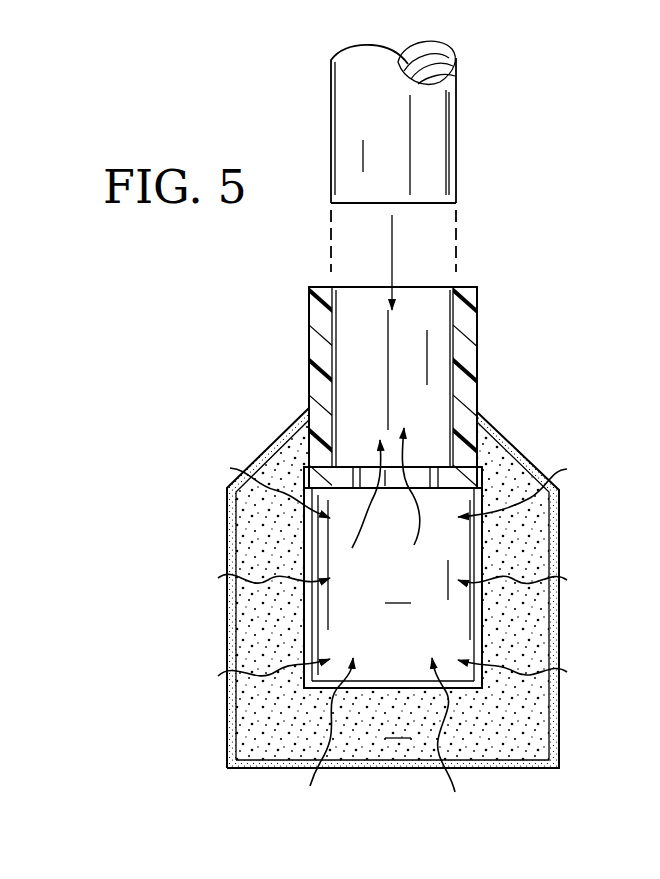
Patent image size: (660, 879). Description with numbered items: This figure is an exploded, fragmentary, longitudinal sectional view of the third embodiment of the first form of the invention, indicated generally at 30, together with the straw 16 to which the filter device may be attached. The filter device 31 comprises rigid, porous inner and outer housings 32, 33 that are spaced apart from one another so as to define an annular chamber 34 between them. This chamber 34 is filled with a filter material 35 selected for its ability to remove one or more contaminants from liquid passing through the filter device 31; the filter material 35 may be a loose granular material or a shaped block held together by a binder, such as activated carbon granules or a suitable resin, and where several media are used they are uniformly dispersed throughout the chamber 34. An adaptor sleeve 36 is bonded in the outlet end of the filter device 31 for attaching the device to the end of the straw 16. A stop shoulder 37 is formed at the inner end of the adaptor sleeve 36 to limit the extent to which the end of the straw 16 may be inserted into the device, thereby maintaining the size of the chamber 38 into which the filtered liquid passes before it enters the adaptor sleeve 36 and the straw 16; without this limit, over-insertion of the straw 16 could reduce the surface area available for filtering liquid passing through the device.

The straw 16 is at (456, 80).
The third embodiment of the first form of the invention 30 is at (430, 539).
The filter device 31 is at (560, 758).
The inner housing 32 is at (478, 543).
The outer housing 33 is at (558, 607).
The annular chamber 34 is at (401, 723).
The filter material 35 is at (530, 642).
The adaptor sleeve 36 is at (478, 350).
The stop shoulder 37 is at (342, 464).
The chamber 38 is at (394, 551).